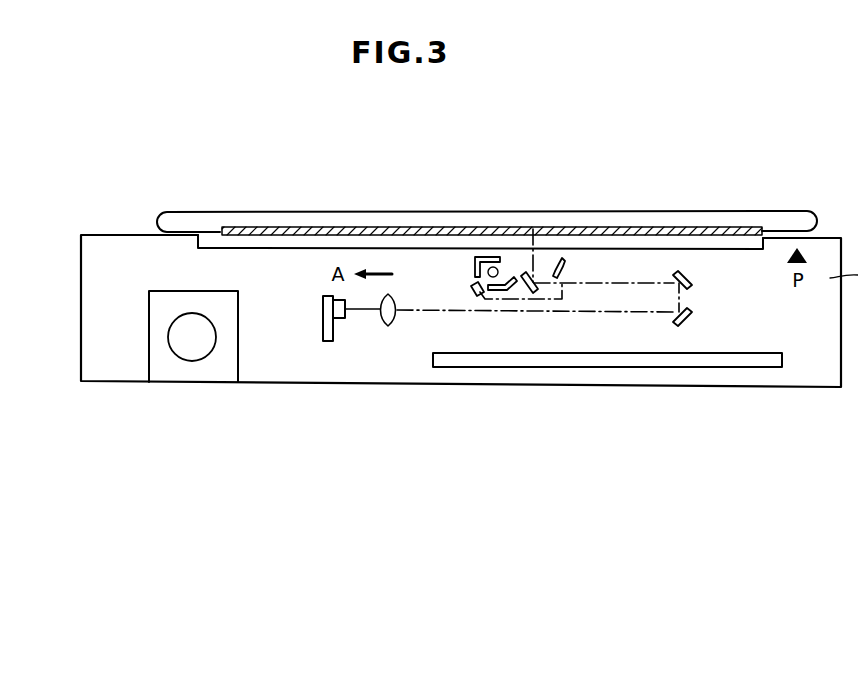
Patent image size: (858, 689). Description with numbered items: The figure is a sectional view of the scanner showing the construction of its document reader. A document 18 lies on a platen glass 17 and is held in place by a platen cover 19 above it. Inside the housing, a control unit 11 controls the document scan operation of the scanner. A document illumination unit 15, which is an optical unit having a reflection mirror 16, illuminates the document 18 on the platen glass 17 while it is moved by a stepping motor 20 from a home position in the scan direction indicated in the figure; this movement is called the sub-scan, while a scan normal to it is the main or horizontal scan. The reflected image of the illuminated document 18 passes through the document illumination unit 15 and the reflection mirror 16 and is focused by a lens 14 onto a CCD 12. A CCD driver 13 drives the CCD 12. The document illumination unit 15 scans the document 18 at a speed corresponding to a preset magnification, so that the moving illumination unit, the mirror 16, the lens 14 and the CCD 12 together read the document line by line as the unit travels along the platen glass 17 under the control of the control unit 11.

The control unit 11 is at (607, 362).
The CCD 12 is at (342, 318).
The CCD driver 13 is at (323, 318).
The lens 14 is at (391, 323).
The document illumination unit 15 is at (474, 268).
The reflection mirror 16 is at (688, 298).
The platen glass 17 is at (250, 237).
The document 18 is at (355, 227).
The platen cover 19 is at (478, 211).
The stepping motor 20 is at (192, 361).